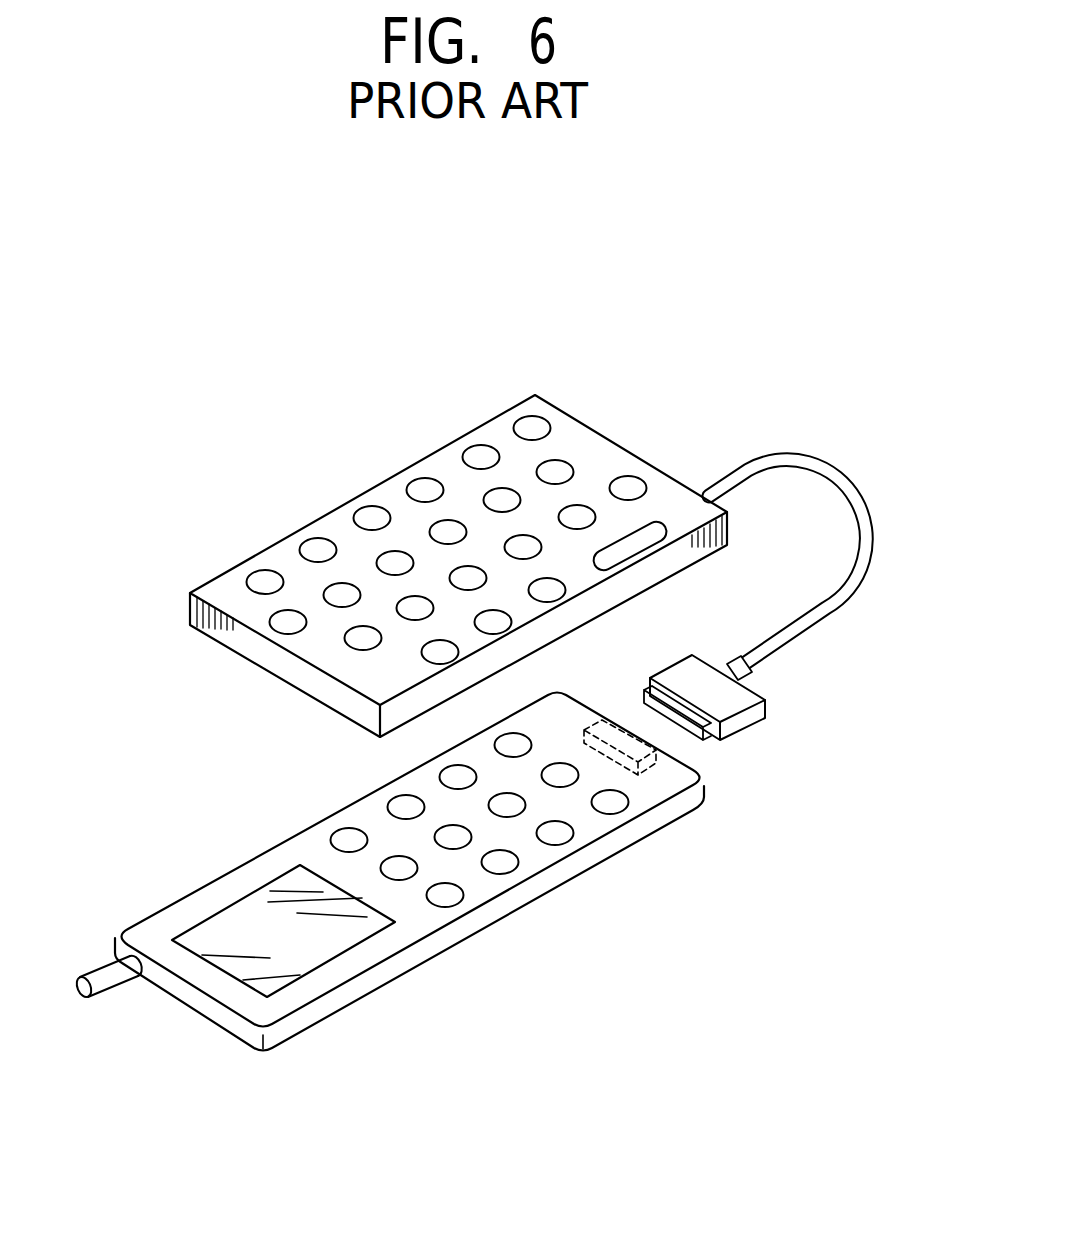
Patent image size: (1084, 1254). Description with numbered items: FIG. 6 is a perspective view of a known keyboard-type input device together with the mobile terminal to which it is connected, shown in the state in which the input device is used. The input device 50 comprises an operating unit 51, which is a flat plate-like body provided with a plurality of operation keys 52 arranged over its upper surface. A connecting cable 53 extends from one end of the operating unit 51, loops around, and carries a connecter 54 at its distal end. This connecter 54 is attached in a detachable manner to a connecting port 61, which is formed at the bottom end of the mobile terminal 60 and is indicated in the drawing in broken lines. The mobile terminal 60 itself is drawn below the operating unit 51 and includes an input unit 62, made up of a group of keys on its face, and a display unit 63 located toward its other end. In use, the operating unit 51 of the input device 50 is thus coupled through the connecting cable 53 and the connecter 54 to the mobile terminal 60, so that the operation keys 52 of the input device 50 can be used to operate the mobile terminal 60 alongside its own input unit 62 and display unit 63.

The input device 50 is at (646, 385).
The operating unit 51 is at (340, 505).
The operation keys 52 is at (418, 487).
The connecting cable 53 is at (855, 587).
The connecter 54 is at (688, 740).
The mobile terminal 60 is at (455, 987).
The connecting port 61 is at (640, 772).
The input unit 62 is at (612, 802).
The display unit 63 is at (235, 948).